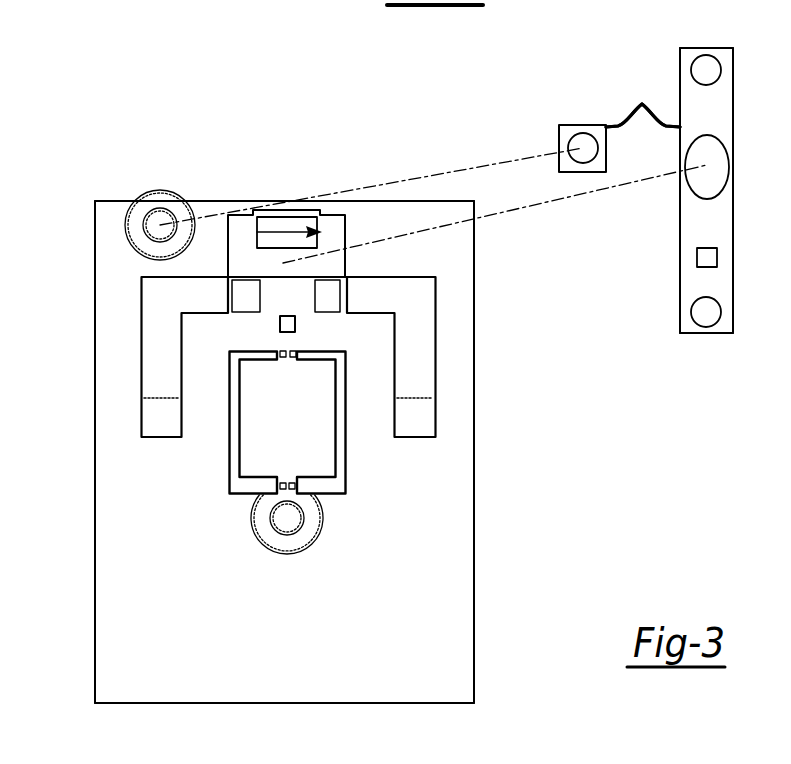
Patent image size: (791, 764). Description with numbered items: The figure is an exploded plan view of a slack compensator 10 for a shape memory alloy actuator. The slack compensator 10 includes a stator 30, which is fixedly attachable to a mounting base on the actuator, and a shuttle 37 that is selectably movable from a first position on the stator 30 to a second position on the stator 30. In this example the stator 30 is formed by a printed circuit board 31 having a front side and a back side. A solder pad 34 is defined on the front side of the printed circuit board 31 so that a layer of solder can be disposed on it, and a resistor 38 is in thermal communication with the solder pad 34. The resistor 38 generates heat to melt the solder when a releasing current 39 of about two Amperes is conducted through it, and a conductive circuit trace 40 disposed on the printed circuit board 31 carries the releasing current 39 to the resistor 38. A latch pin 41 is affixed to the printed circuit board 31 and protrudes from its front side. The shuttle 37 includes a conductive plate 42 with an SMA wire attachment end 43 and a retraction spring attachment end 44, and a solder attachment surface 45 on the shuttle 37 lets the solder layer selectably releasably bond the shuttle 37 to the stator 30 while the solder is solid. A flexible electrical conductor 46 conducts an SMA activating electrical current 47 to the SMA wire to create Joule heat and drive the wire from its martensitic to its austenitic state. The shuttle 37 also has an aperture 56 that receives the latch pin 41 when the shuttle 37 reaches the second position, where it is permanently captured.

The slack compensator 10 is at (106, 104).
The stator 30 is at (113, 277).
The printed circuit board 31 is at (284, 446).
The solder pad 34 is at (286, 262).
The shuttle 37 is at (725, 118).
The resistor 38 is at (314, 229).
The releasing current 39 is at (282, 238).
The conductive circuit trace 40 is at (138, 340).
The latch pin 41 is at (278, 325).
The conductive plate 42 is at (722, 93).
The SMA wire attachment end 43 is at (706, 48).
The retraction spring attachment end 44 is at (707, 334).
The solder attachment surface 45 is at (717, 165).
The flexible electrical conductor 46 is at (637, 90).
The SMA activating electrical current 47 is at (648, 84).
The aperture 56 is at (698, 258).